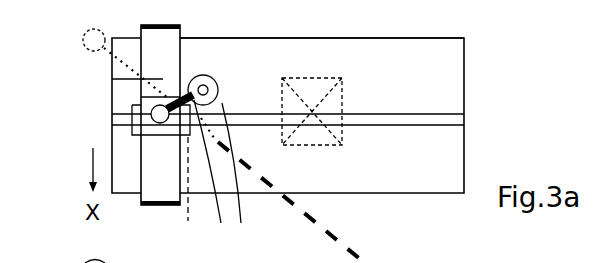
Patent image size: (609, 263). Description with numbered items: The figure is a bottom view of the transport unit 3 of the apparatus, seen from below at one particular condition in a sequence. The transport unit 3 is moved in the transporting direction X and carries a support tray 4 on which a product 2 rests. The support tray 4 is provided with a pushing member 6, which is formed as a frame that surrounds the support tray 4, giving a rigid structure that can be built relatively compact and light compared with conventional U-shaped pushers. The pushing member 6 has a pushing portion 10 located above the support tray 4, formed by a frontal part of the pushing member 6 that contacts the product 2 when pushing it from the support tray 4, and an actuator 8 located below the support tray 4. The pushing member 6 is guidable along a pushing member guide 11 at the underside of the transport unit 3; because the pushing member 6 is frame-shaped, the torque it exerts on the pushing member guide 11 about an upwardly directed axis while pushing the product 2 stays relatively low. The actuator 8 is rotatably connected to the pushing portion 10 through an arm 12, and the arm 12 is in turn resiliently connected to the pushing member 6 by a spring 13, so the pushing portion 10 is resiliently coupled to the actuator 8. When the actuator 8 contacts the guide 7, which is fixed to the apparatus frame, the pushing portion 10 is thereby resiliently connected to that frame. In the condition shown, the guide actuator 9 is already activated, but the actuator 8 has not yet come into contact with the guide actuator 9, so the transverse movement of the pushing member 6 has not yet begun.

The product 2 is at (345, 101).
The transport unit 3 is at (452, 48).
The support tray 4 is at (448, 75).
The pushing member 6 is at (112, 78).
The guide 7 is at (310, 219).
The actuator 8 is at (208, 162).
The guide actuator 9 is at (112, 59).
The pushing portion 10 is at (193, 193).
The pushing member guide 11 is at (455, 119).
The arm 12 is at (215, 175).
The spring 13 is at (151, 114).